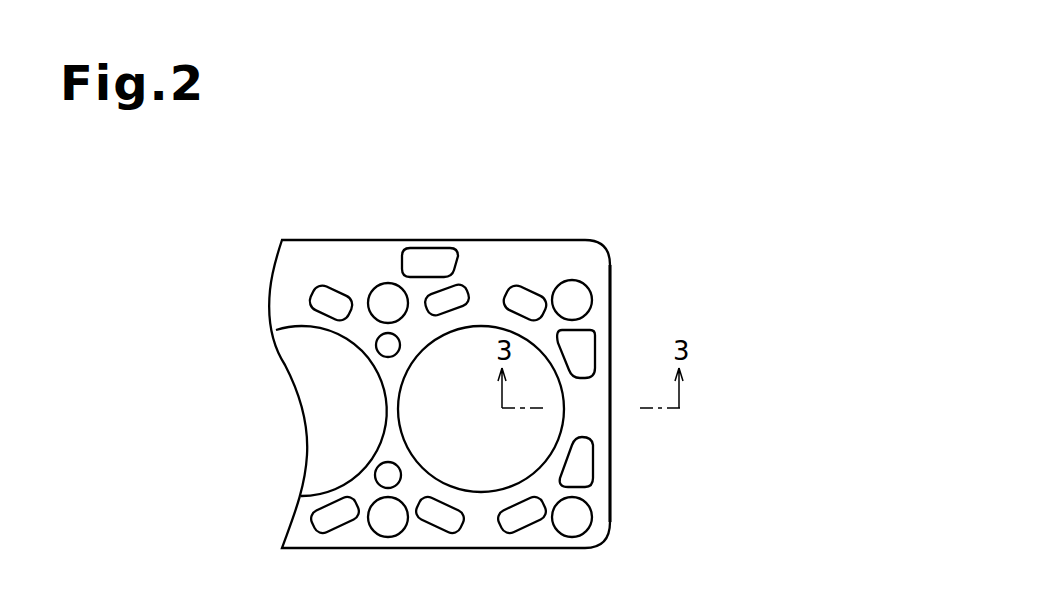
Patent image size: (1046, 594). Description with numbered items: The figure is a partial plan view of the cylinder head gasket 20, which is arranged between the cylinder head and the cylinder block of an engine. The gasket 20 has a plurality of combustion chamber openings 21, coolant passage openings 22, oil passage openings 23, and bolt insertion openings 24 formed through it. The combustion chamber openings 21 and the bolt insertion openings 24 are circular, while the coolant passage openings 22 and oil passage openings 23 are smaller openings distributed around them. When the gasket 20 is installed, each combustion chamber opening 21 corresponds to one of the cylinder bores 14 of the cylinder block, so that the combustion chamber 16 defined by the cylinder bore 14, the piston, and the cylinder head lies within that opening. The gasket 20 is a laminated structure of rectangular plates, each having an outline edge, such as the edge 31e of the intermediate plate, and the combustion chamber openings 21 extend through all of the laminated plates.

The cylinder head gasket 20 is at (616, 222).
The combustion chamber opening 21 is at (322, 440).
The coolant passage opening 22 is at (327, 305).
The oil passage opening 23 is at (432, 258).
The bolt insertion opening 24 is at (388, 296).
The cylinder bore 14 is at (550, 427).
The combustion chamber 16 is at (453, 423).
The edge of intermediate plate 31e is at (610, 483).